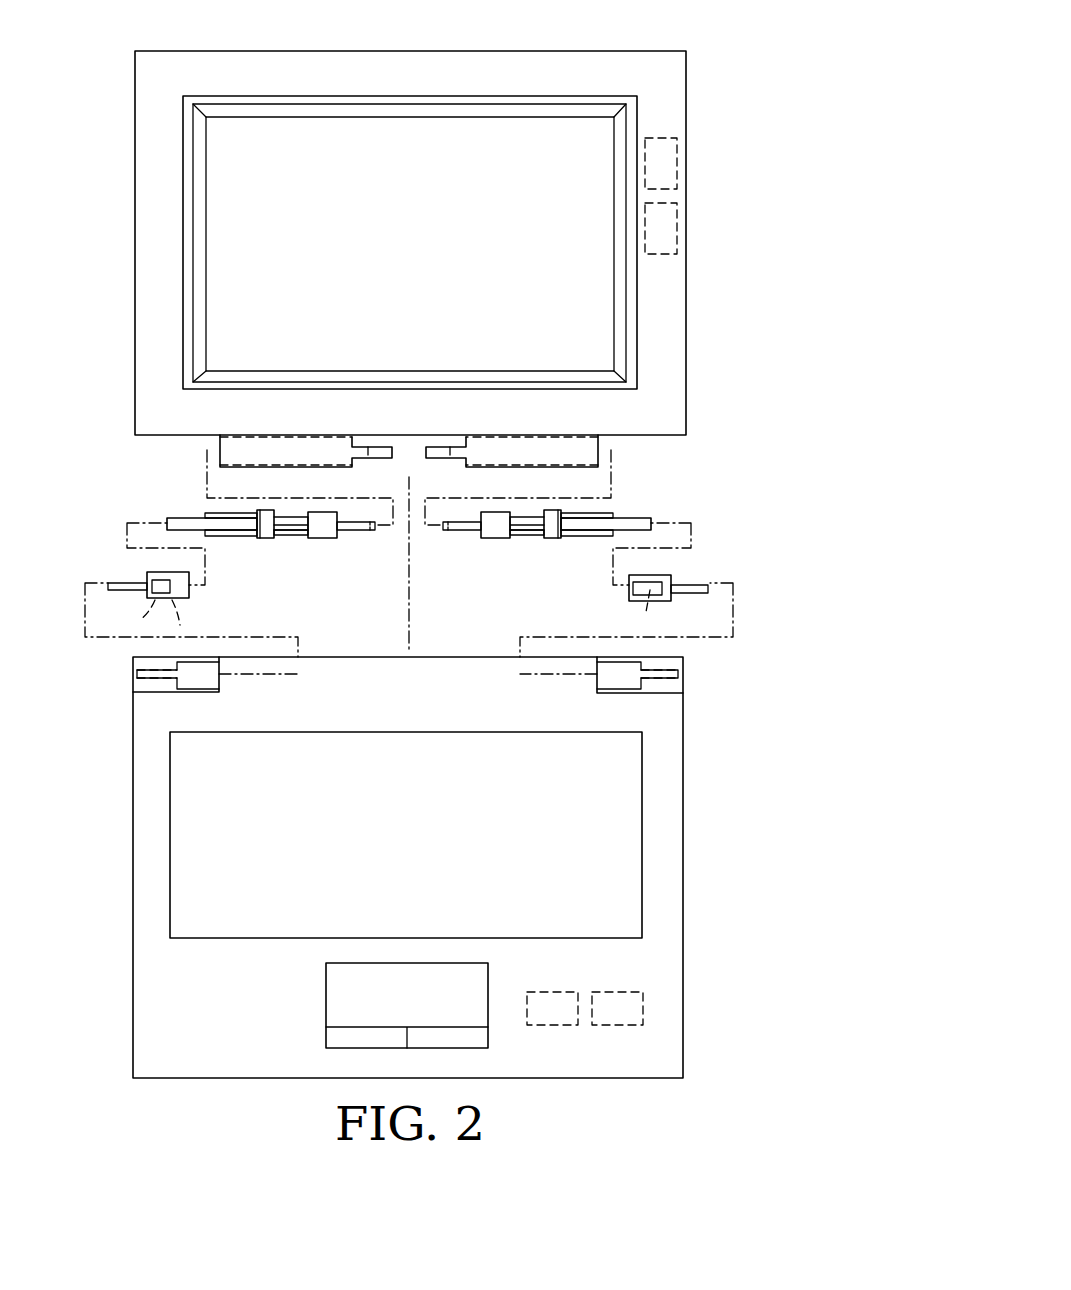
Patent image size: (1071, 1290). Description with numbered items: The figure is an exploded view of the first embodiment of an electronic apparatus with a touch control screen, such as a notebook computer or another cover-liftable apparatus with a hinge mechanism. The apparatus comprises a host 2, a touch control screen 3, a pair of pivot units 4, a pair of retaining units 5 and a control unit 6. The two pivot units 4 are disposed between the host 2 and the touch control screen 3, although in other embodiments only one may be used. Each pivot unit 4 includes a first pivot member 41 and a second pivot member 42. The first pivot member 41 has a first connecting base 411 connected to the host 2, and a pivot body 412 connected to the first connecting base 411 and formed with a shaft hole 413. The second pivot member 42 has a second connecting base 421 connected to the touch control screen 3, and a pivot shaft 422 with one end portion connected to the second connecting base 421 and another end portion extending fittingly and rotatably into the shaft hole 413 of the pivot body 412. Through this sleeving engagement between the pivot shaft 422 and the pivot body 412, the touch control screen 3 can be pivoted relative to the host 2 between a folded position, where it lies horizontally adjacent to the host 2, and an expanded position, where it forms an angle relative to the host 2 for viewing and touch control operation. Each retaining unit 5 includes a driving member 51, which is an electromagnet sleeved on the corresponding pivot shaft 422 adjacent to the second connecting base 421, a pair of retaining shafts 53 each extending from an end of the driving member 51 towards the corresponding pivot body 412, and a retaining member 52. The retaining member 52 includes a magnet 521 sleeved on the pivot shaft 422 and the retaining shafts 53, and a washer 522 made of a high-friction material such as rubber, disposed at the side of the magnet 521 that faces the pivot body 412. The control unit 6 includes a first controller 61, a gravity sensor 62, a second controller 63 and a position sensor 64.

The host 2 is at (665, 830).
The touch control screen 3 is at (492, 70).
The pivot unit 4 is at (130, 490).
The first pivot member 41 is at (125, 558).
The first connecting base 411 is at (110, 583).
The pivot body 412 is at (662, 602).
The shaft hole 413 is at (646, 612).
The second pivot member 42 is at (365, 582).
The second connecting base 421 is at (375, 527).
The pivot shaft 422 is at (177, 523).
The retaining unit 5 is at (302, 545).
The driving member 51 is at (328, 532).
The retaining member 52 is at (205, 502).
The magnet 521 is at (267, 532).
The washer 522 is at (260, 540).
The retaining shaft 53 is at (210, 513).
The control unit 6 is at (618, 1033).
The first controller 61 is at (557, 1015).
The gravity sensor 62 is at (665, 160).
The second controller 63 is at (665, 232).
The position sensor 64 is at (612, 1004).